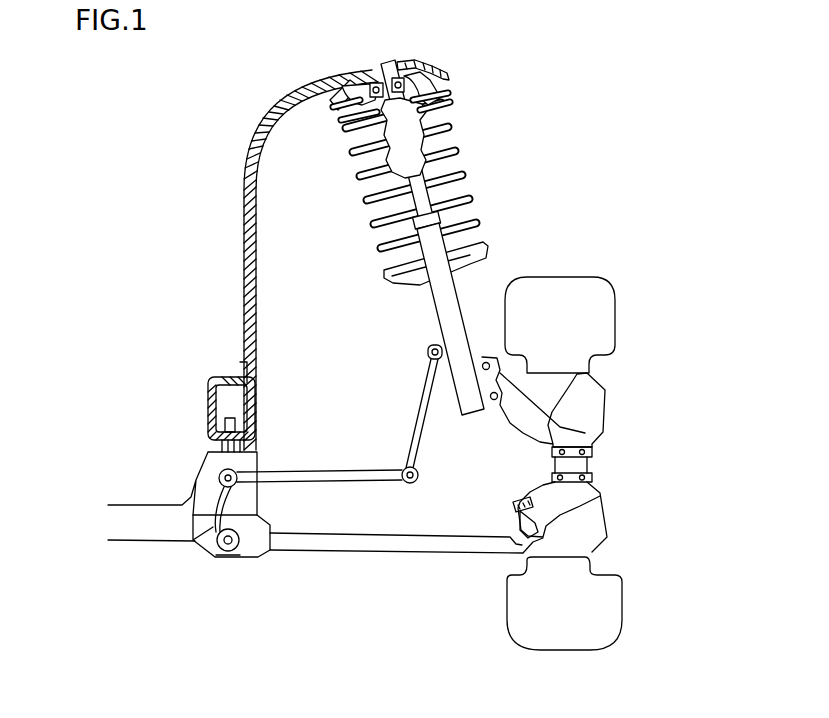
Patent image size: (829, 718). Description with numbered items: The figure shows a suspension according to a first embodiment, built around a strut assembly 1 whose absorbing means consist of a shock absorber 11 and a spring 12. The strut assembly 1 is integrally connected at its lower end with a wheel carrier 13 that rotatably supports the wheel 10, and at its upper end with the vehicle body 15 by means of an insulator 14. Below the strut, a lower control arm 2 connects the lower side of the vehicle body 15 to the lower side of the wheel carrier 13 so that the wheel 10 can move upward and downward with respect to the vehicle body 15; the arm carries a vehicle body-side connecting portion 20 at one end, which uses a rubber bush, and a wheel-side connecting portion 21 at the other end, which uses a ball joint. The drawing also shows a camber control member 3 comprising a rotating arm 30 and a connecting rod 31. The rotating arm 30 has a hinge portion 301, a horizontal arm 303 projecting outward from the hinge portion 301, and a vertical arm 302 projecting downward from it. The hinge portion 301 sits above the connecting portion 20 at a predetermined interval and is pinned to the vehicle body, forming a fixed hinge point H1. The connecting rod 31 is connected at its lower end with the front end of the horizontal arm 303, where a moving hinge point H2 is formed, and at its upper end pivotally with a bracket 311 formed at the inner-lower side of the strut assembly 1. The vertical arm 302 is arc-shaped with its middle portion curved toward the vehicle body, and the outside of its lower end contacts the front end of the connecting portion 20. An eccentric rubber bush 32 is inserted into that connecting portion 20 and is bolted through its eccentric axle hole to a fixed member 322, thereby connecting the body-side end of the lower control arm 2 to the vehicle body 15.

The strut assembly 1 is at (538, 193).
The lower control arm 2 is at (397, 546).
The camber control member 3 is at (210, 483).
The wheel 10 is at (609, 322).
The shock absorber 11 is at (466, 226).
The spring 12 is at (466, 202).
The wheel carrier 13 is at (562, 431).
The insulator 14 is at (419, 74).
The vehicle body 15 is at (247, 251).
The vehicle body-side connecting portion 20 is at (228, 554).
The wheel-side connecting portion 21 is at (516, 520).
The rotating arm 30 is at (290, 472).
The connecting rod 31 is at (427, 384).
The eccentric rubber bush 32 is at (243, 548).
The hinge portion 301 is at (215, 471).
The vertical arm 302 is at (219, 528).
The horizontal arm 303 is at (347, 469).
The bracket 311 is at (428, 346).
The fixed member 322 is at (262, 520).
The fixed hinge point H1 is at (222, 470).
The moving hinge point H2 is at (420, 477).